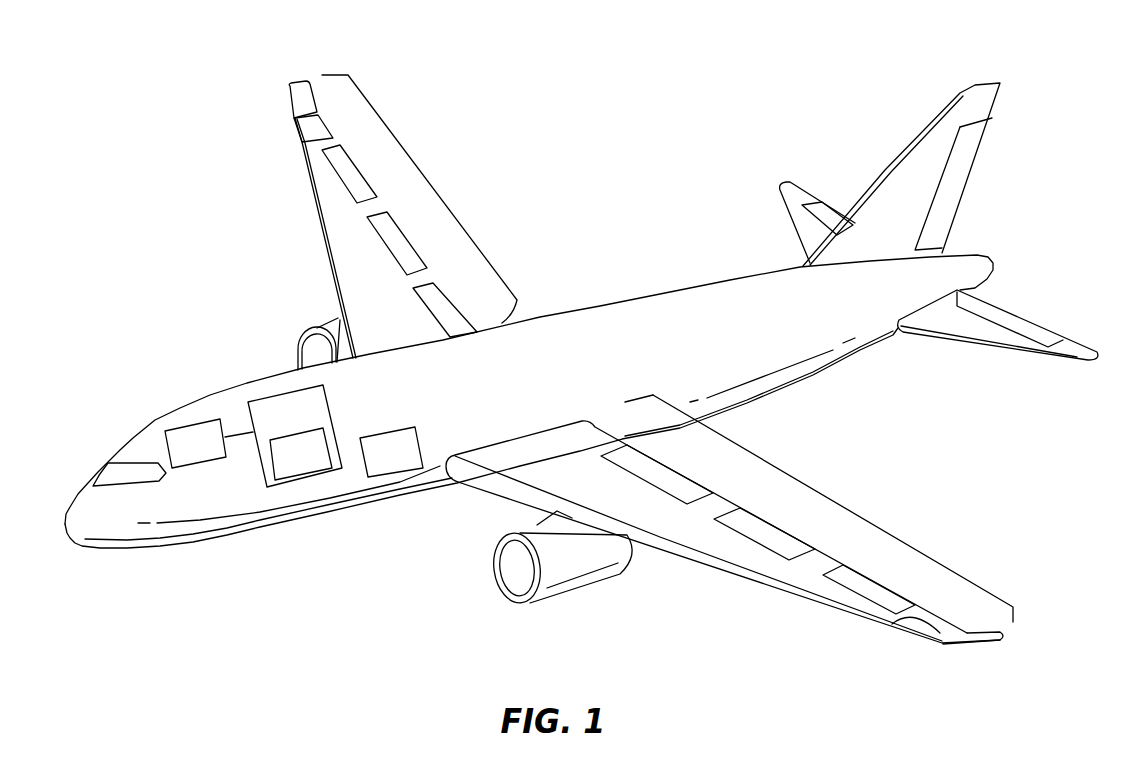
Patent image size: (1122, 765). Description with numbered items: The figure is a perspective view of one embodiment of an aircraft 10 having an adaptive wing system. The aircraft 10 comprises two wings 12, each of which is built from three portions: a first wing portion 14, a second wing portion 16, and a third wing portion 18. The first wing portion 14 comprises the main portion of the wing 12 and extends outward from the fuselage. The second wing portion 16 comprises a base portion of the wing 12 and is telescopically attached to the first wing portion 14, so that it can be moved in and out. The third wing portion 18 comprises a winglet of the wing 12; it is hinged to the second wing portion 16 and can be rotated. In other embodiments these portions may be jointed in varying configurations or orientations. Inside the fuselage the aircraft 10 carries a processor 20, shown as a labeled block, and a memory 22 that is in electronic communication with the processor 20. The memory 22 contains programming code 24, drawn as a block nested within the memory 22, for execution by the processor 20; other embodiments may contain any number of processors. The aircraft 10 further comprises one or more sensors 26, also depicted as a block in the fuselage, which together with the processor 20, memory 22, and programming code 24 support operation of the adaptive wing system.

The aircraft 10 is at (581, 357).
The wing 12 is at (425, 182).
The first wing portion 14 is at (367, 268).
The second wing portion 16 is at (312, 128).
The third wing portion 18 is at (300, 98).
The processor 20 is at (183, 457).
The memory 22 is at (280, 426).
The programming code 24 is at (290, 469).
The sensors 26 is at (380, 464).